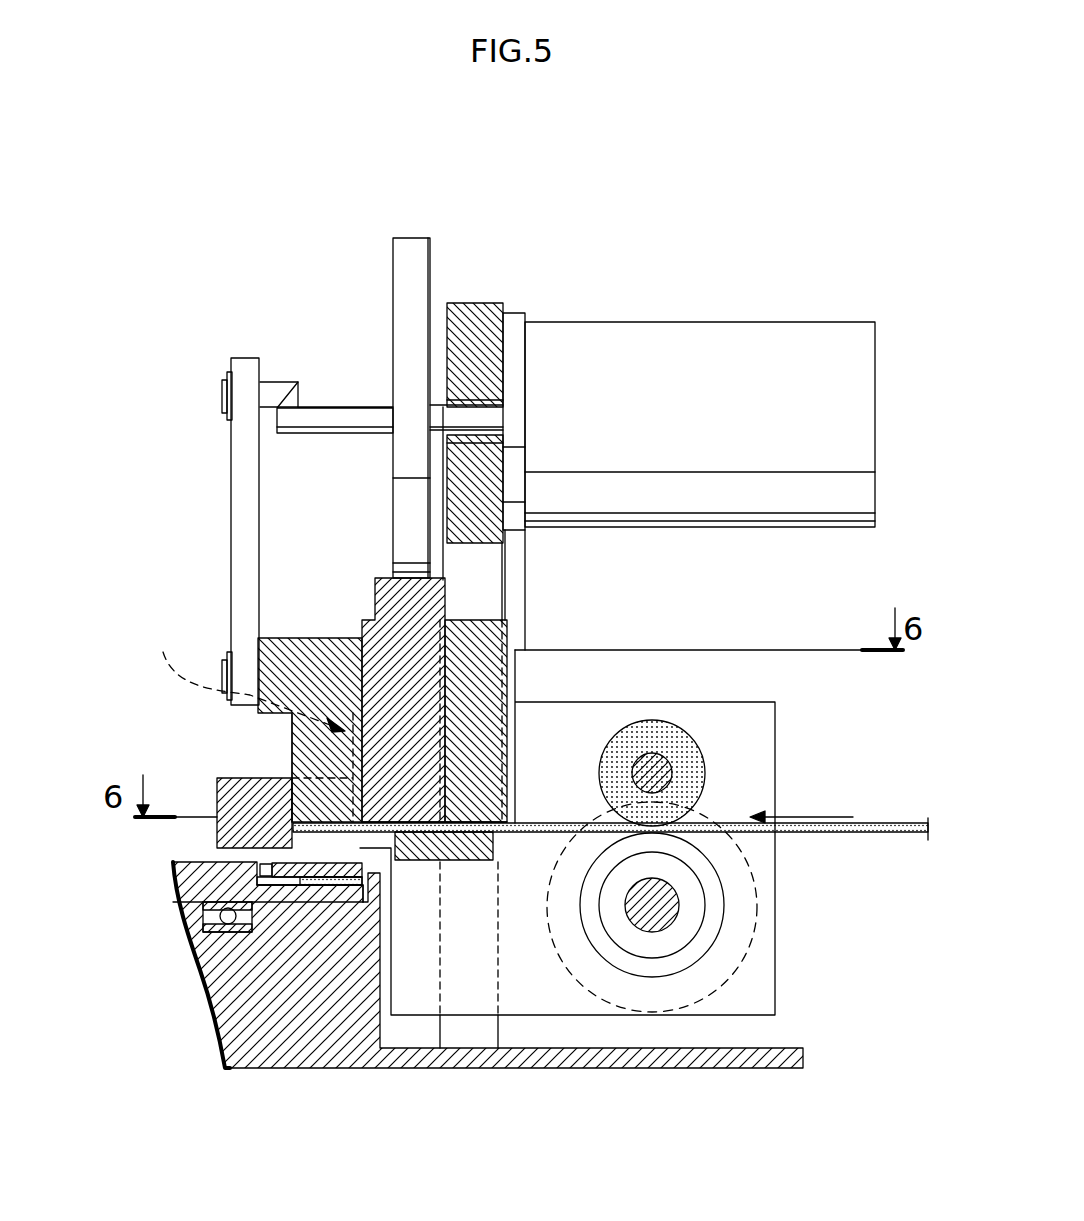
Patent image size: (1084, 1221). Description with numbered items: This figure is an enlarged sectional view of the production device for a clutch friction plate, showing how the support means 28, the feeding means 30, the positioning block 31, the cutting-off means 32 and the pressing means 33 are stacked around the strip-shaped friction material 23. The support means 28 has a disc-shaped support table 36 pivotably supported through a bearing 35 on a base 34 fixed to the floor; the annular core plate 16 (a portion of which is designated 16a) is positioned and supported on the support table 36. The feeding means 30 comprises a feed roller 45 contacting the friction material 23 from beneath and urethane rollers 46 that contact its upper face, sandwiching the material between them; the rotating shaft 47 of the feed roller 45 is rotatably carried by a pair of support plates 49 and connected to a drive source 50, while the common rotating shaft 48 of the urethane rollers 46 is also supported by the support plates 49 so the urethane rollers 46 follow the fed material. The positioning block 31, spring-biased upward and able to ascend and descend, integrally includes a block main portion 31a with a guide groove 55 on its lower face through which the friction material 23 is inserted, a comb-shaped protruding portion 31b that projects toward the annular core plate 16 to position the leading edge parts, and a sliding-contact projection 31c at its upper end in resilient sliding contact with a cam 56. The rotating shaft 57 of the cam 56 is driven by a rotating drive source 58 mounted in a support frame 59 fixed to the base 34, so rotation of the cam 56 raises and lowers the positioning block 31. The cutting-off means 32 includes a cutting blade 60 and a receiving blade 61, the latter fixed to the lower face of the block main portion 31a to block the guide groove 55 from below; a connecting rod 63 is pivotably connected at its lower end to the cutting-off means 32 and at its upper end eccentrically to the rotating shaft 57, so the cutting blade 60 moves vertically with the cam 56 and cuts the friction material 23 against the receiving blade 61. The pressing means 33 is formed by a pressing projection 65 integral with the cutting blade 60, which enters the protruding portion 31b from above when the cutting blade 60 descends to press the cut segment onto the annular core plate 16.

The annular core plate 16 is at (315, 870).
The guide surface 16a is at (293, 857).
The strip-shaped friction material 23 is at (810, 833).
The support means 28 is at (170, 930).
The feeding means 30 is at (718, 910).
The positioning block 31 is at (519, 633).
The block main portion 31a is at (475, 625).
The protruding portion 31b is at (235, 812).
The sliding-contact projection 31c is at (375, 600).
The cutting-off means 32 is at (292, 628).
The pressing means 33 is at (275, 733).
The base 34 is at (225, 1022).
The bearing 35 is at (213, 985).
The support table 36 is at (360, 898).
The feed roller 45 is at (592, 925).
The urethane roller 46 is at (695, 755).
The rotating shaft 47 is at (652, 905).
The common rotating shaft 48 is at (652, 765).
The support plate 49 is at (760, 780).
The drive source 50 is at (700, 995).
The guide groove 55 is at (430, 848).
The cam 56 is at (400, 325).
The rotating shaft 57 is at (372, 420).
The rotating drive source 58 is at (718, 441).
The support frame 59 is at (475, 328).
The cutting blade 60 is at (241, 673).
The receiving blade 61 is at (413, 862).
The connecting rod 63 is at (237, 494).
The pressing projection 65 is at (300, 750).